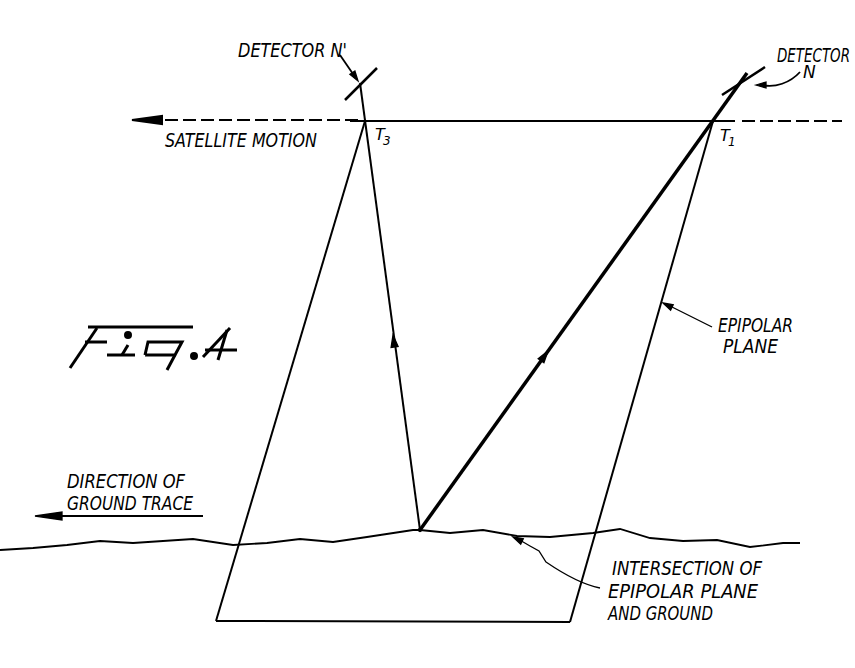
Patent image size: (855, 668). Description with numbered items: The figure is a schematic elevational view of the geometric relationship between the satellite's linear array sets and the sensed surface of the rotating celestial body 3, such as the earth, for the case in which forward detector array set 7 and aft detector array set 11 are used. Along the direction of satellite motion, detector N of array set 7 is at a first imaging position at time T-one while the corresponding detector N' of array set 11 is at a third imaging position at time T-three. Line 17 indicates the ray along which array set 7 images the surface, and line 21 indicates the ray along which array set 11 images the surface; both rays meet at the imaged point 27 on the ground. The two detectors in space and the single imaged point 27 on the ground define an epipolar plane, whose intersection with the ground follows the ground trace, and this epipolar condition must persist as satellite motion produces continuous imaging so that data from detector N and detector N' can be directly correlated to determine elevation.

The rotating celestial body 3 is at (314, 526).
The detector array set 7 is at (745, 75).
The detector array set 11 is at (377, 68).
The imaging line 17 is at (623, 250).
The imaging line 21 is at (382, 262).
The imaged point 27 is at (423, 528).